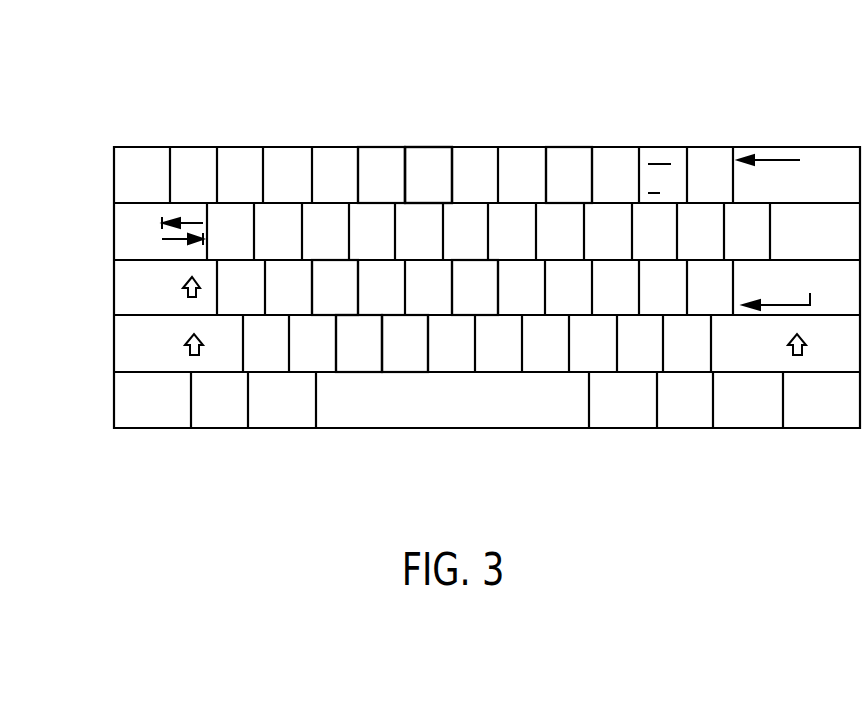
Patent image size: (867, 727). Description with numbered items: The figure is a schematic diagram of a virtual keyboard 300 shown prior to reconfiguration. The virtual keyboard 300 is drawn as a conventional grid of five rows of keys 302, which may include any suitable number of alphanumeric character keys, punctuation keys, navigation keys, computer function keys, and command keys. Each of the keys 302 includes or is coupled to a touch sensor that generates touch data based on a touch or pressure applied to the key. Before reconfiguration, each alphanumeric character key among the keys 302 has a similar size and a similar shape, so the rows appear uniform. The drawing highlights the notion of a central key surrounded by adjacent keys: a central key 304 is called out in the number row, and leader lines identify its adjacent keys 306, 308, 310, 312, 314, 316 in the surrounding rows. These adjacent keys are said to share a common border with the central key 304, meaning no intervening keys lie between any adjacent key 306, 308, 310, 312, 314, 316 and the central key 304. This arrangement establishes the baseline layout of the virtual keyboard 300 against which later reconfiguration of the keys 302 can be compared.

The virtual keyboard 300 is at (453, 268).
The keys 302 is at (582, 135).
The central key 304 is at (417, 115).
The adjacent key 306 is at (369, 135).
The adjacent key 308 is at (445, 135).
The adjacent key 310 is at (387, 411).
The adjacent key 312 is at (434, 397).
The adjacent key 314 is at (320, 377).
The adjacent key 316 is at (494, 381).